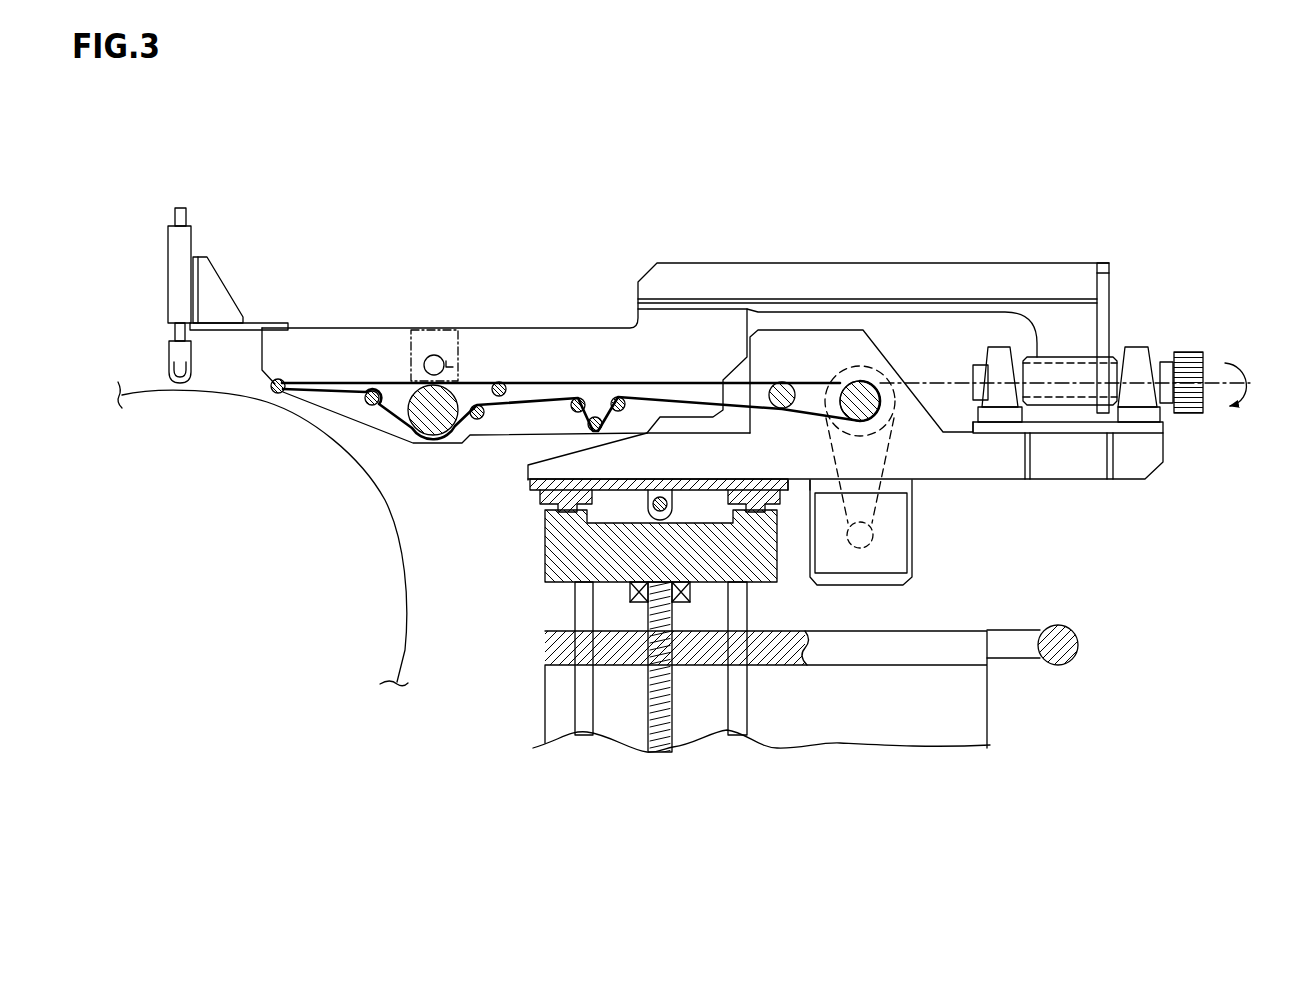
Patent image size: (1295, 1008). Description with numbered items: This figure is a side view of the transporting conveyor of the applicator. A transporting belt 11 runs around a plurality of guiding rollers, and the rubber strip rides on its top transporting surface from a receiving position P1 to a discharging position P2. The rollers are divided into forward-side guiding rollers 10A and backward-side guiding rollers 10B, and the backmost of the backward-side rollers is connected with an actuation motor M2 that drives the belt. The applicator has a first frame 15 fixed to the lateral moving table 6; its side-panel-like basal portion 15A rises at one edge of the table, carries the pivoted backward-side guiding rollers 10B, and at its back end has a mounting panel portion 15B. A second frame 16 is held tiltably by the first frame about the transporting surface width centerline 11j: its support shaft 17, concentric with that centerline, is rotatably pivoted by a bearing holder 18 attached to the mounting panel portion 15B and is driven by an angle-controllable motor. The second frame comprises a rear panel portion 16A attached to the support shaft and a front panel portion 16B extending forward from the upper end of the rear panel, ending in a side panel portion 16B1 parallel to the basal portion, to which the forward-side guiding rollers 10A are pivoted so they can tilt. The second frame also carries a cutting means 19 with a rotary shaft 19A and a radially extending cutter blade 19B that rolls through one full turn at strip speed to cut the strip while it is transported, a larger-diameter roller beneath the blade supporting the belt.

The lateral moving table 6 is at (710, 485).
The forward-side guiding rollers 10A is at (273, 395).
The backward-side guiding rollers 10B is at (782, 408).
The transporting belt 11 is at (535, 382).
The transporting surface width centerline 11j is at (1213, 385).
The first frame 15 is at (1222, 553).
The basal portion 15A is at (972, 459).
The mounting panel portion 15B is at (1090, 422).
The second frame 16 is at (1097, 132).
The rear panel portion 16A is at (1110, 292).
The front panel portion 16B is at (940, 298).
The side panel portion 16B1 is at (583, 345).
The support shaft 17 is at (1080, 365).
The bearing holder 18 is at (1145, 348).
The cutting means 19 is at (407, 315).
The rotary shaft 19A is at (434, 354).
The cutter blade 19B is at (447, 361).
The receiving position P1 is at (858, 376).
The discharging position P2 is at (278, 377).
The actuation motor M2 is at (912, 548).